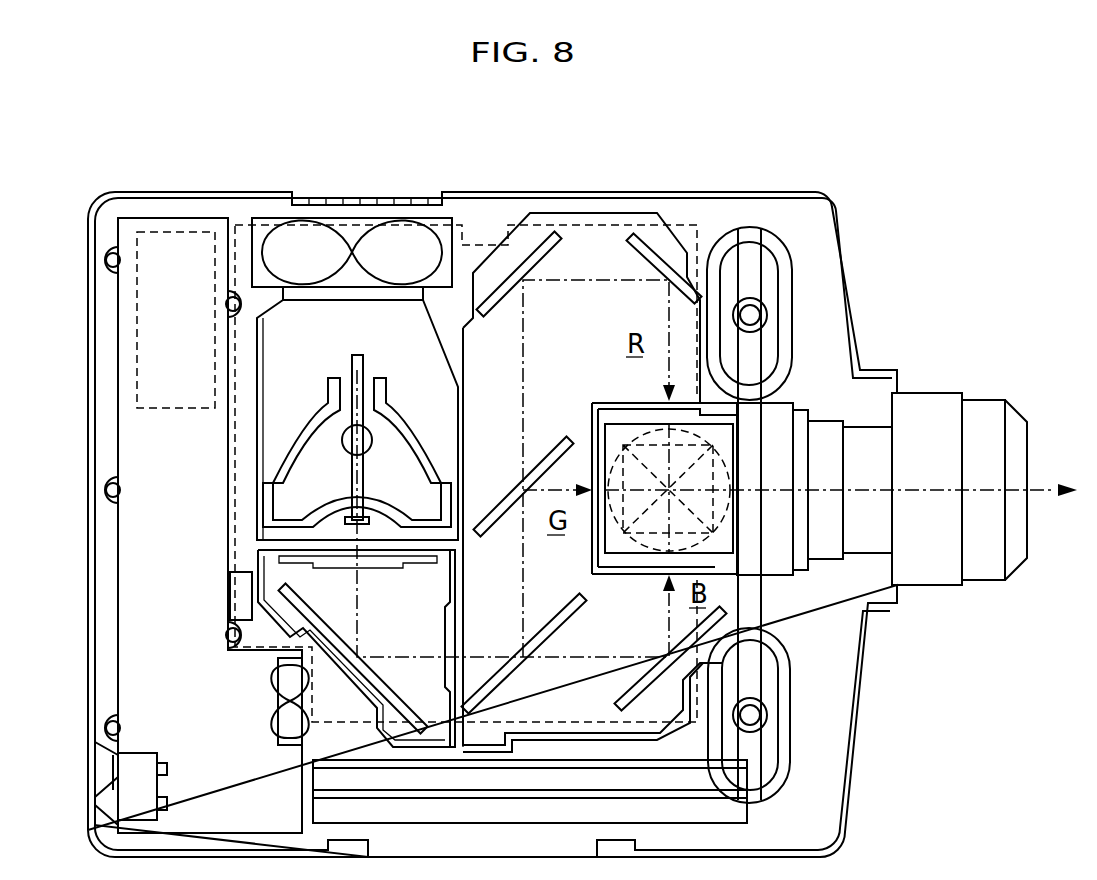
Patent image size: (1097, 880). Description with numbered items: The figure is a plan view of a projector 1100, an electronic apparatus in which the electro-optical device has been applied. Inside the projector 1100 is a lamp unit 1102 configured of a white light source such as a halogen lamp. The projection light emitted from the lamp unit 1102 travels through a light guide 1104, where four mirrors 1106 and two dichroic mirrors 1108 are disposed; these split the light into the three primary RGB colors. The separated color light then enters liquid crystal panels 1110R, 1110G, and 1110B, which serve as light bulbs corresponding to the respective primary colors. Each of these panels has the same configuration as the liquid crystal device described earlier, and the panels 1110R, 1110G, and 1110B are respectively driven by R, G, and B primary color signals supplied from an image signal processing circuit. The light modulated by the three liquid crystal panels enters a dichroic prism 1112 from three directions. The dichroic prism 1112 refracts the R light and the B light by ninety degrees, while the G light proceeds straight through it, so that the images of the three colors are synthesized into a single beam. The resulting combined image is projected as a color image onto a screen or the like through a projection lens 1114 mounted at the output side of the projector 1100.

The projector 1100 is at (852, 197).
The lamp unit 1102 is at (407, 337).
The light guide 1104 is at (505, 230).
The mirror 1106 is at (645, 254).
The dichroic mirror 1108 is at (550, 628).
The liquid crystal panel 1110R is at (633, 402).
The liquid crystal panel 1110G is at (598, 458).
The liquid crystal panel 1110B is at (630, 574).
The dichroic prism 1112 is at (740, 556).
The projection lens 1114 is at (995, 407).